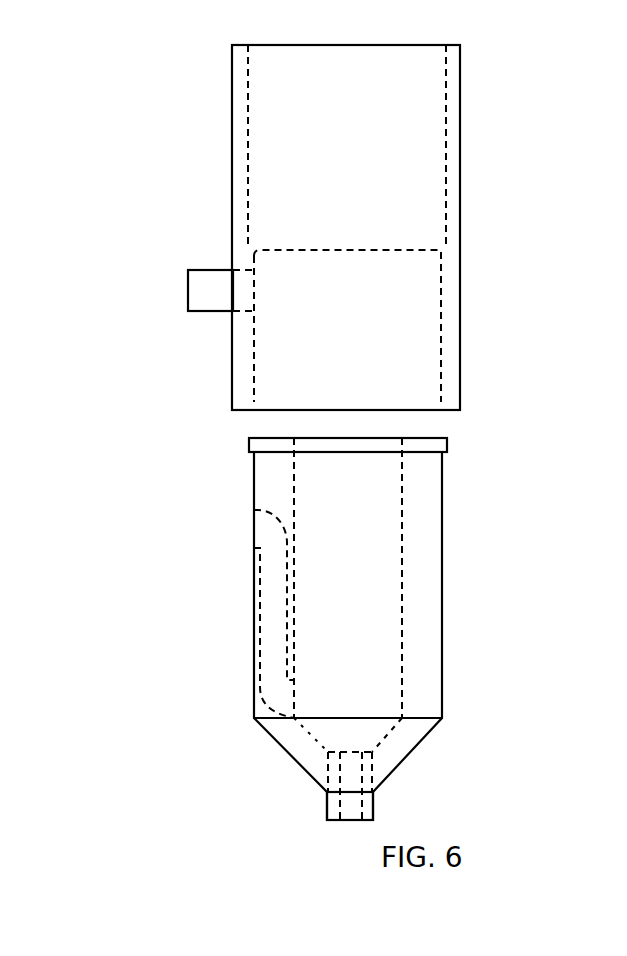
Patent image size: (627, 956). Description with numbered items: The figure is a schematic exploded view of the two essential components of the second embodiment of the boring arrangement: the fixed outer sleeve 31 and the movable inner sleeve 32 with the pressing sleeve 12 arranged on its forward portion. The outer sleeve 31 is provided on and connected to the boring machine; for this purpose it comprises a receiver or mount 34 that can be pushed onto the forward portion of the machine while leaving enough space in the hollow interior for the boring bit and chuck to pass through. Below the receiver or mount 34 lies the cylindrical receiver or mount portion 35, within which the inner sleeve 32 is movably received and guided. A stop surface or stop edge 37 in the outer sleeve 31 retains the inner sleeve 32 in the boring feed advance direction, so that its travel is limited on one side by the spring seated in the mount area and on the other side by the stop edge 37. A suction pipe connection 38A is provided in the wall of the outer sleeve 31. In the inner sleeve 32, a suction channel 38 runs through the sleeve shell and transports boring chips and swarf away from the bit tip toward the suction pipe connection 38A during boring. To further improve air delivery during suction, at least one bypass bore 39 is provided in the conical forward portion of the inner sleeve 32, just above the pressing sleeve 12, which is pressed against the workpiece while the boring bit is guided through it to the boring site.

The outer sleeve 31 is at (432, 88).
The receiver or mount 34 is at (368, 141).
The cylindrical receiver or mount portion 35 is at (369, 340).
The stop surface or stop edge 37 is at (443, 247).
The suction pipe connection 38A is at (212, 297).
The inner sleeve 32 is at (433, 565).
The suction channel 38 is at (263, 528).
The bypass bore 39 is at (403, 758).
The pressing sleeve 12 is at (333, 803).